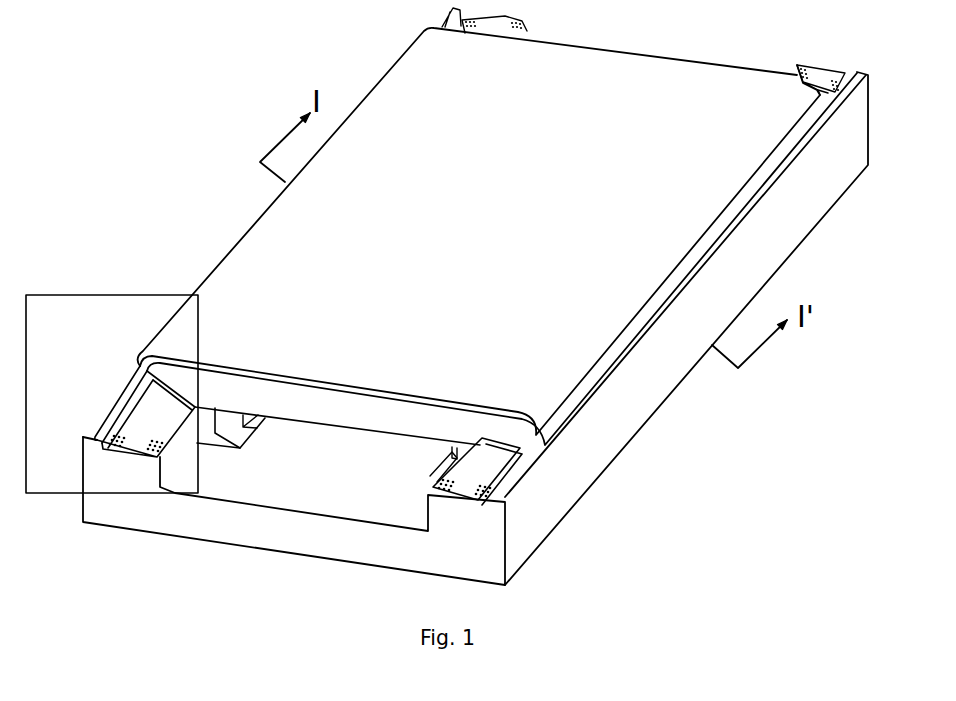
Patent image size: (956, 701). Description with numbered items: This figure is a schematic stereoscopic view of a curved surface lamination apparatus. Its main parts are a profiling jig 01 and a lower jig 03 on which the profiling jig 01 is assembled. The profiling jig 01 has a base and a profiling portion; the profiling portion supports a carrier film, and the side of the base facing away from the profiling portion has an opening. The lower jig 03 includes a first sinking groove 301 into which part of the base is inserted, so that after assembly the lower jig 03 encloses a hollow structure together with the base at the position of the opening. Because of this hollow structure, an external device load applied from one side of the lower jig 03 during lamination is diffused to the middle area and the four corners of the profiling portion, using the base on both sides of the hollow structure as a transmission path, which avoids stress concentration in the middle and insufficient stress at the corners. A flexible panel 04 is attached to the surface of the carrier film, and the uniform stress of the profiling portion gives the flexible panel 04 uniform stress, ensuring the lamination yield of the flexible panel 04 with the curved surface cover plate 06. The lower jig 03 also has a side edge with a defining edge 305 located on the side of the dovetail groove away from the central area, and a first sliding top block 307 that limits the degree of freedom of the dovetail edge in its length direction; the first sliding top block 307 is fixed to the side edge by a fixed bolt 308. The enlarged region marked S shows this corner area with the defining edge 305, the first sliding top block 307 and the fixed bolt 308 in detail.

The profiling jig 01 is at (148, 420).
The lower jig 03 is at (625, 400).
The flexible panel 04 is at (147, 363).
The curved surface cover plate 06 is at (155, 355).
The first sinking groove 301 is at (228, 443).
The defining edge 305 is at (100, 422).
The first sliding top block 307 is at (127, 408).
The fixed bolt 308 is at (100, 432).
The enlarged region S is at (100, 295).